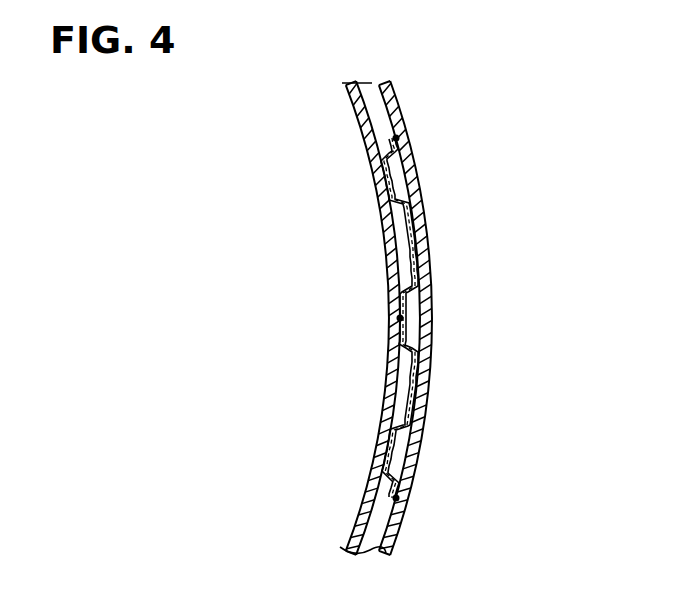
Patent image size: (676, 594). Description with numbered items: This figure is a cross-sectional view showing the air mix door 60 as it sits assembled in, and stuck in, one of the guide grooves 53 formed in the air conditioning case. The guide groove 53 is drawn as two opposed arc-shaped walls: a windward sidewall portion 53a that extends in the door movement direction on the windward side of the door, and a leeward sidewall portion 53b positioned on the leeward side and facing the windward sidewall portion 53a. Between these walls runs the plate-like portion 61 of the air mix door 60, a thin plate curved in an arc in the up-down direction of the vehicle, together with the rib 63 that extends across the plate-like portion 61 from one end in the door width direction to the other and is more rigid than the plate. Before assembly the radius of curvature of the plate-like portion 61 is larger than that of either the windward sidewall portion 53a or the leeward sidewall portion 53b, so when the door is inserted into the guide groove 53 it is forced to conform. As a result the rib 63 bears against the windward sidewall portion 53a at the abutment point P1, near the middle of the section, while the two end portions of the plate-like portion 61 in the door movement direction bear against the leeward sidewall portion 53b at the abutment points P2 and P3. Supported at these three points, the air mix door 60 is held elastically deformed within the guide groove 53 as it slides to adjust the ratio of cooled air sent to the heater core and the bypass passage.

The guide groove 53 is at (314, 318).
The windward sidewall portion 53a is at (363, 132).
The leeward sidewall portion 53b is at (383, 90).
The air mix door 60 is at (476, 318).
The plate-like portion 61 is at (409, 253).
The rib 63 is at (516, 245).
The abutment point P1 is at (397, 318).
The abutment point P2 is at (400, 137).
The abutment point P3 is at (400, 497).